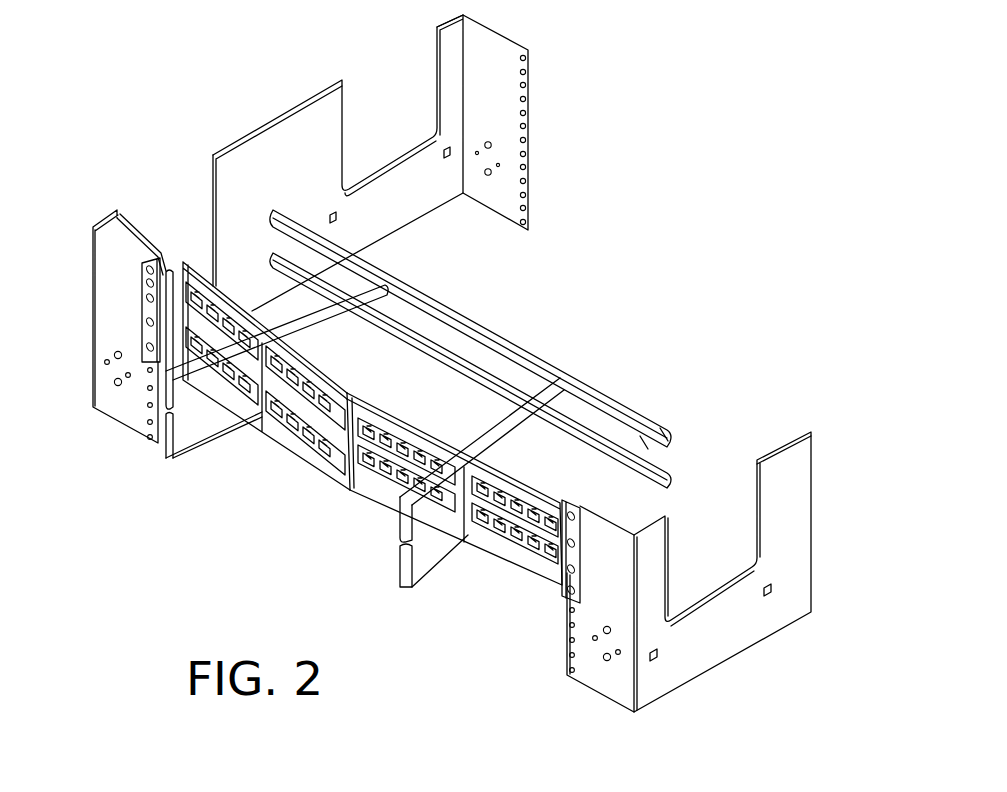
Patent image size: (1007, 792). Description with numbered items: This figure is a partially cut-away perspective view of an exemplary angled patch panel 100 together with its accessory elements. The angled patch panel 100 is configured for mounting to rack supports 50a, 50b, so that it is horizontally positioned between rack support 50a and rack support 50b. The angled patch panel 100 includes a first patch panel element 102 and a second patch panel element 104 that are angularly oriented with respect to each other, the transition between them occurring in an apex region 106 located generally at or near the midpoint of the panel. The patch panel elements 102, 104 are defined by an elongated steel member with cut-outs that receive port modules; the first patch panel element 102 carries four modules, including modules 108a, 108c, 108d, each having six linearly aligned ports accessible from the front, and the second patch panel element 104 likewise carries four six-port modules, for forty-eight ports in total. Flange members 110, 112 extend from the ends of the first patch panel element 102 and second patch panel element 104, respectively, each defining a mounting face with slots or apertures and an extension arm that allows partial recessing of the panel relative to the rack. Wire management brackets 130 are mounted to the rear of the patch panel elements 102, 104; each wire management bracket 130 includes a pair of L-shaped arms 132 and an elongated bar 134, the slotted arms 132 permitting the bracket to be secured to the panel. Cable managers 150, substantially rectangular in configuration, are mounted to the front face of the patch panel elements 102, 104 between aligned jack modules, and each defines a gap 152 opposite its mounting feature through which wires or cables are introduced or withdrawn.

The rack support 50a is at (110, 285).
The rack support 50b is at (787, 464).
The angled patch panel 100 is at (304, 436).
The first patch panel element 102 is at (223, 358).
The second patch panel element 104 is at (512, 473).
The apex region 106 is at (345, 497).
The module 108a is at (185, 300).
The module 108c is at (227, 377).
The module 108d is at (310, 373).
The flange member 110 is at (150, 346).
The flange member 112 is at (570, 553).
The wire management bracket 130 is at (452, 302).
The L-shaped arm 132 is at (372, 293).
The elongated bar 134 is at (642, 436).
The cable manager 150 is at (167, 285).
The gap 152 is at (168, 416).